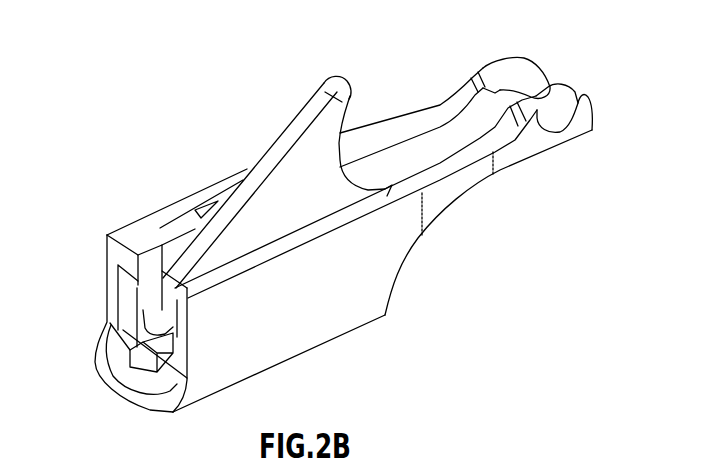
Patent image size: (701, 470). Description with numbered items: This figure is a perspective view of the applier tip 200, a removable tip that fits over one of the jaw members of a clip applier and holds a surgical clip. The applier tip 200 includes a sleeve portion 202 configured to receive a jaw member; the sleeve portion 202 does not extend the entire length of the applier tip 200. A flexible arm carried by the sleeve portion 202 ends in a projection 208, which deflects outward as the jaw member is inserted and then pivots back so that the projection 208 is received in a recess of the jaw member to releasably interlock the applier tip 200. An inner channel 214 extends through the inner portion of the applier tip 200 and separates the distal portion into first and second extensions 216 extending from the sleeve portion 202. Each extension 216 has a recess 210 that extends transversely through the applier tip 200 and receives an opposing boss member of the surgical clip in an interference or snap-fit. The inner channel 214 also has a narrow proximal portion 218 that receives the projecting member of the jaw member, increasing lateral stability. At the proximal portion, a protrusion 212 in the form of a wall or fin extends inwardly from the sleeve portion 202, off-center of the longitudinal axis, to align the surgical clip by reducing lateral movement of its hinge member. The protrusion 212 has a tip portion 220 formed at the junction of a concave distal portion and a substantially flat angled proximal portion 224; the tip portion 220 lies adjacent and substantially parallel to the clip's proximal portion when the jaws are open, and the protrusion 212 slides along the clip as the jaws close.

The applier tip 200 is at (122, 102).
The sleeve portion 202 is at (317, 328).
The projection 208 is at (117, 290).
The narrow proximal portion 218 is at (156, 253).
The protrusion 212 is at (292, 170).
The substantially flat angled proximal portion 224 is at (267, 163).
The tip portion 220 is at (352, 92).
The inner channel 214 is at (432, 135).
The extension 216 is at (360, 135).
The recess 210 is at (563, 103).